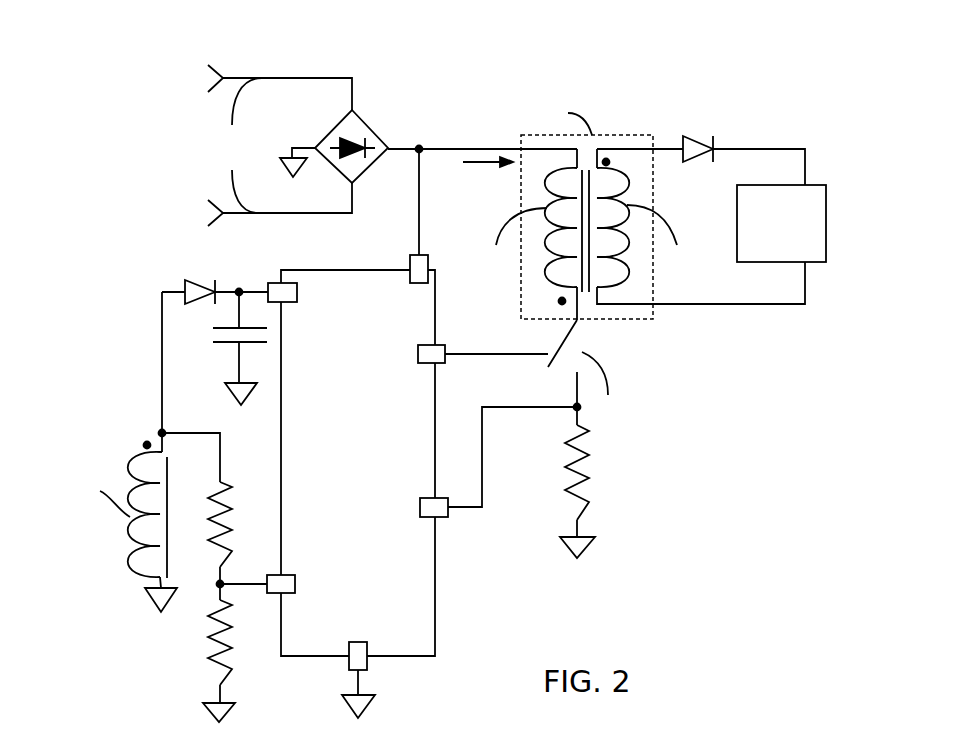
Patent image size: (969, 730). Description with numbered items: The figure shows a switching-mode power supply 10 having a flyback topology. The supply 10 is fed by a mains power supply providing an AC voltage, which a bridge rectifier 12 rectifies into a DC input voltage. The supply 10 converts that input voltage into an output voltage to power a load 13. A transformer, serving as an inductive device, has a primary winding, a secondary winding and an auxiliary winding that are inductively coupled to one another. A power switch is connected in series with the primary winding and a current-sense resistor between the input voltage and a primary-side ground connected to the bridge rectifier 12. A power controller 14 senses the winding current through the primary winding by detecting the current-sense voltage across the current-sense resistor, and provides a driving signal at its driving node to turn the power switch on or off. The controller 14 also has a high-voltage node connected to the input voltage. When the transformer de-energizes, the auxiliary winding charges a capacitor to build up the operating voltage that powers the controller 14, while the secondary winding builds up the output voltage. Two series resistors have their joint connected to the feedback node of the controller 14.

The switching-mode power supply 10 is at (512, 72).
The bridge rectifier 12 is at (362, 117).
The load 13 is at (770, 242).
The power controller 14 is at (332, 437).